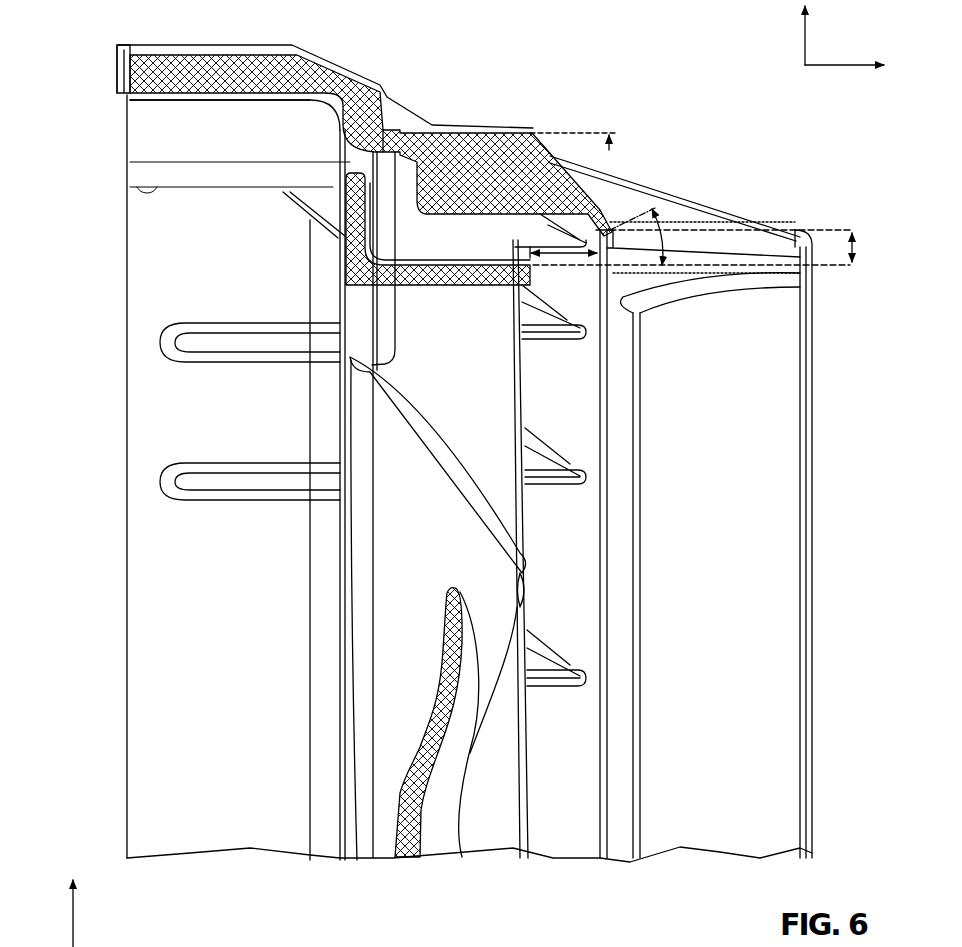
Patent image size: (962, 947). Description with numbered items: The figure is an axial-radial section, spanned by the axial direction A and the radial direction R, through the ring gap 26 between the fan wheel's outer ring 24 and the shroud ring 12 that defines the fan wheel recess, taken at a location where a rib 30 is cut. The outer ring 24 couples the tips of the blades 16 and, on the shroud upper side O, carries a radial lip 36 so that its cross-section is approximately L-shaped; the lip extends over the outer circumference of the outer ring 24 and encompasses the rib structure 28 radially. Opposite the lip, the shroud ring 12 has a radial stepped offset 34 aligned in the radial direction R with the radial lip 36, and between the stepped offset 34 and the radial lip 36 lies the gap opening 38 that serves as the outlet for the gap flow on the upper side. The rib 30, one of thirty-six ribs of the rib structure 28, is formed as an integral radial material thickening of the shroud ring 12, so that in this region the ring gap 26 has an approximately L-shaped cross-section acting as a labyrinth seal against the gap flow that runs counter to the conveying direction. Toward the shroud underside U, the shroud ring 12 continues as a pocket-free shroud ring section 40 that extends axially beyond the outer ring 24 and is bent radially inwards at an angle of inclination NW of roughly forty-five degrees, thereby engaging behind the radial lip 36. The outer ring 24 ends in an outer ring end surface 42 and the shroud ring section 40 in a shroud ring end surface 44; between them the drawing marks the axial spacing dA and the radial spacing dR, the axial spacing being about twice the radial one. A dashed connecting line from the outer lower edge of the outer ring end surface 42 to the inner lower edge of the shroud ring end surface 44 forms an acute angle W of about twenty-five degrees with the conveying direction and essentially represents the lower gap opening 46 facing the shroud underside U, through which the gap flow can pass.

The shroud ring 12 is at (473, 140).
The blade 16 is at (427, 793).
The outer ring 24 is at (437, 228).
The ring gap 26 is at (385, 190).
The rib structure 28 is at (862, 507).
The rib 30 is at (537, 220).
The stepped offset 34 is at (333, 140).
The radial lip 36 is at (340, 233).
The gap opening 38 is at (353, 164).
The shroud ring section 40 is at (607, 221).
The outer ring end surface 42 is at (548, 276).
The shroud ring end surface 44 is at (603, 214).
The gap opening 46 is at (415, 240).
The shroud upper side O is at (116, 69).
The shroud underside U is at (815, 646).
The angle of inclination NW is at (592, 190).
The acute angle W is at (618, 244).
The axial spacing dA is at (573, 255).
The radial spacing dR is at (856, 250).
The radial direction R is at (805, 30).
The axial direction A is at (845, 65).